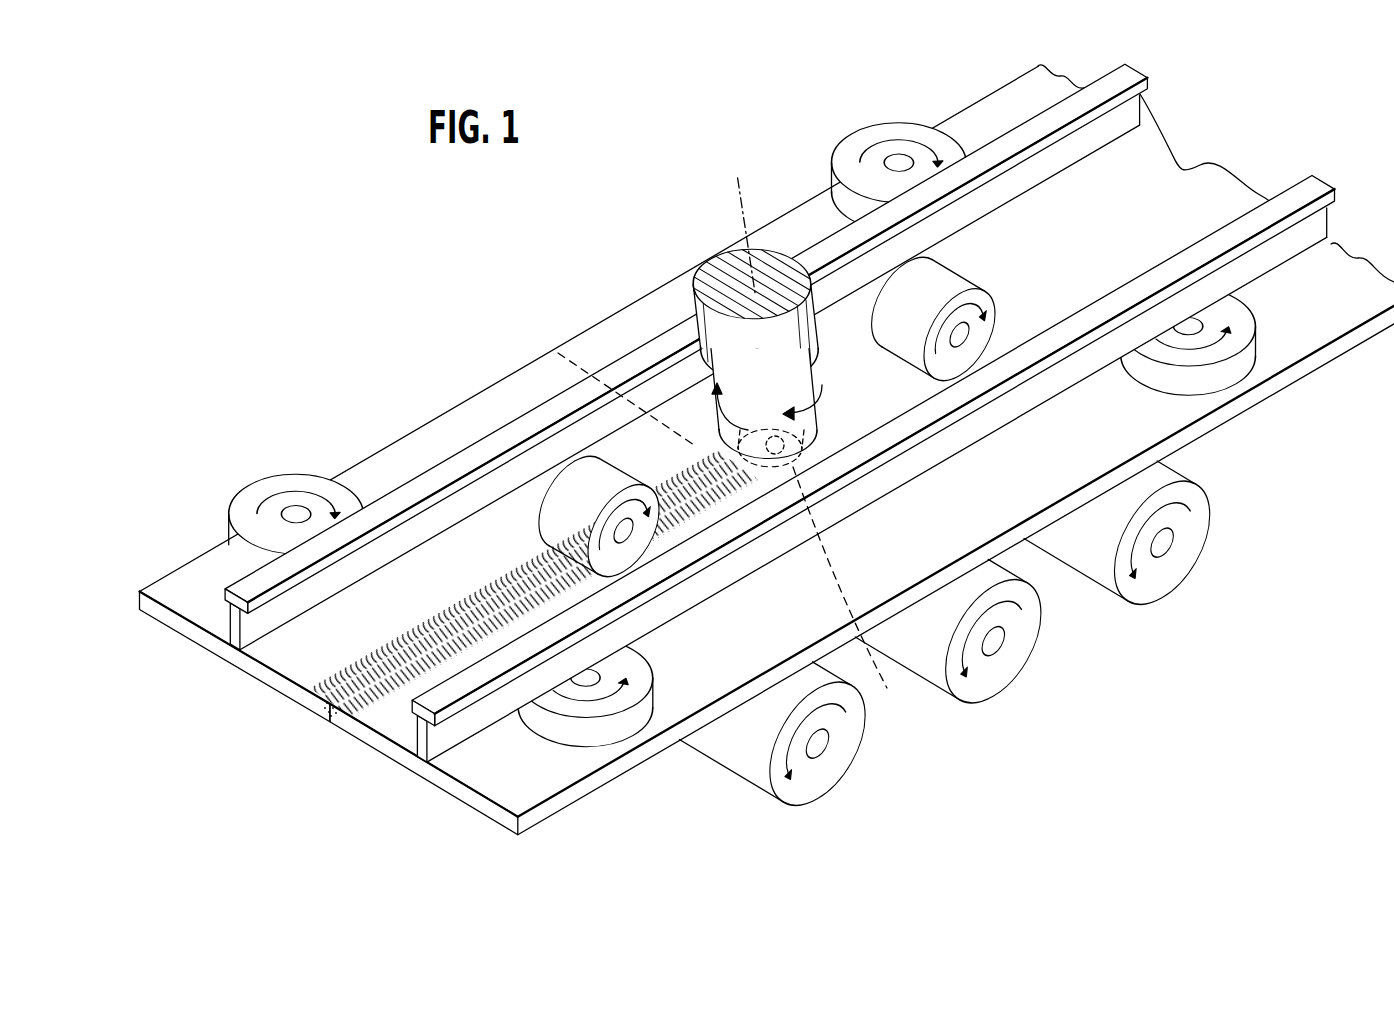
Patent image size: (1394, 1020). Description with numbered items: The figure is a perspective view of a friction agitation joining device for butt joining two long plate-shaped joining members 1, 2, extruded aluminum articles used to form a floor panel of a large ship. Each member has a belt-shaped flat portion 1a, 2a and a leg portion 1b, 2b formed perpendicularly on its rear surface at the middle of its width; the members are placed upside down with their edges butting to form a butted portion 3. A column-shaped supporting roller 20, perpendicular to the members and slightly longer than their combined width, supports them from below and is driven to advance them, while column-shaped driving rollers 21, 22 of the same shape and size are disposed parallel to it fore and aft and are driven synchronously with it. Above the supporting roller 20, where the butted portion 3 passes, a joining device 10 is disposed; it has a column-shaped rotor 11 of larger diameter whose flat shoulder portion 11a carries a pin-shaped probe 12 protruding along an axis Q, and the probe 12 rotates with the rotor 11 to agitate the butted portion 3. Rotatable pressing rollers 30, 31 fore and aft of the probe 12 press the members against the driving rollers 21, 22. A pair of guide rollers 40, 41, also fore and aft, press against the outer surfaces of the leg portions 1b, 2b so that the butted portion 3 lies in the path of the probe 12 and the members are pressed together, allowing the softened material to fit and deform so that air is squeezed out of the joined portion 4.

The joining member 1 is at (210, 575).
The flat portion 1a is at (246, 665).
The leg portion 1b is at (236, 613).
The joining member 2 is at (540, 790).
The flat portion 2a is at (473, 793).
The leg portion 2b is at (420, 733).
The butted portion 3 is at (1173, 204).
The joined portion 4 is at (337, 688).
The joining device 10 is at (686, 296).
The rotor 11 is at (707, 386).
The shoulder portion 11a is at (702, 402).
The probe 12 is at (740, 539).
The supporting roller 20 is at (972, 690).
The driving roller 21 is at (753, 770).
The driving roller 22 is at (1102, 570).
The pressing roller 30 is at (533, 487).
The pressing roller 31 is at (842, 272).
The guide roller 40 is at (293, 481).
The guide roller 41 is at (877, 137).
The axis Q is at (730, 197).